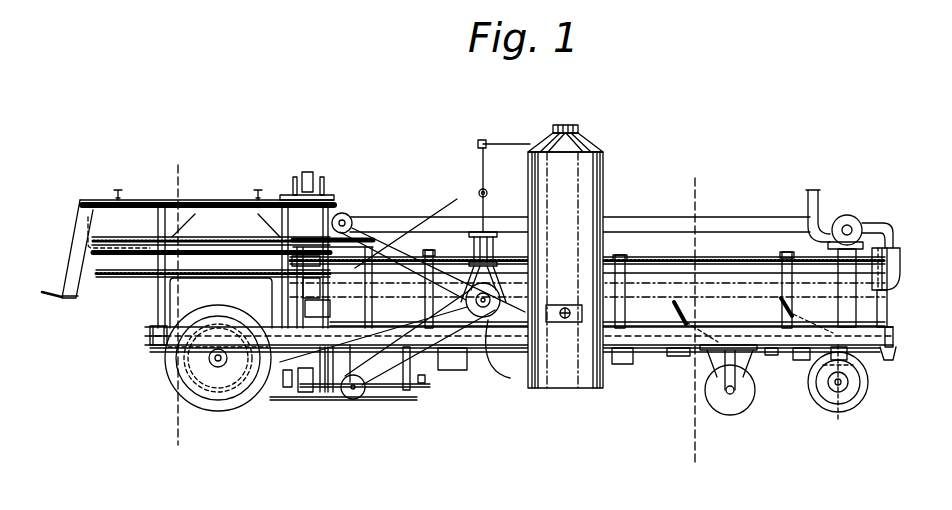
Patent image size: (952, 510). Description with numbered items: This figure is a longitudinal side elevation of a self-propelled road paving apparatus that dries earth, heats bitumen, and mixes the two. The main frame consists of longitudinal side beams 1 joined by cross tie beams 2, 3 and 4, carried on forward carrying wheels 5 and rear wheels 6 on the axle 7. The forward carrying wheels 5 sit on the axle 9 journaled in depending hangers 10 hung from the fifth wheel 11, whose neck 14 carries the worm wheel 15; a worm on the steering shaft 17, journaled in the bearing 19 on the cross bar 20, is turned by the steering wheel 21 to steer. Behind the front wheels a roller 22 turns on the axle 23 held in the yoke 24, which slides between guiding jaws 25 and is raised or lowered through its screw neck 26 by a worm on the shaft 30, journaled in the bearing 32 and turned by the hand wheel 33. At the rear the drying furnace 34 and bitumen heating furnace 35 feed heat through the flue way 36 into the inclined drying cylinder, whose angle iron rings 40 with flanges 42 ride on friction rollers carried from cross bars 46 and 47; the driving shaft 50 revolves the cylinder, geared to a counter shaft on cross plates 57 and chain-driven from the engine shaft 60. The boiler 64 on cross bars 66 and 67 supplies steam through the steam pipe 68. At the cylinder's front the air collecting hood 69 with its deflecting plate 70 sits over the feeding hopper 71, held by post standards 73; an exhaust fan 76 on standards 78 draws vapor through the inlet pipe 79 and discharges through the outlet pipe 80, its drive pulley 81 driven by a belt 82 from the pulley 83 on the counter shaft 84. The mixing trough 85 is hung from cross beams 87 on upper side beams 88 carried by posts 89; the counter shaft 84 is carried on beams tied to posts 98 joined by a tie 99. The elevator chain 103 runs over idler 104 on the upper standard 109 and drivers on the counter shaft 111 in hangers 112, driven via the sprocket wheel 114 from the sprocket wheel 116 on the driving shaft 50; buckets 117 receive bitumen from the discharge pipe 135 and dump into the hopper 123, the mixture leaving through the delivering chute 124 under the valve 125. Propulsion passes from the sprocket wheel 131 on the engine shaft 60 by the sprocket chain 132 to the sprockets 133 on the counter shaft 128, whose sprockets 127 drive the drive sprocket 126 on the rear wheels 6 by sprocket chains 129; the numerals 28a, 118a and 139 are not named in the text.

The side beams 1 is at (150, 337).
The cross tie beam 2 is at (894, 340).
The cross tie beam 3 is at (779, 374).
The cross tie beam 4 is at (176, 308).
The forward carrying wheels 5 is at (692, 317).
The rear wheels 6 is at (218, 375).
The axle 7 is at (828, 390).
The axle 9 is at (839, 385).
The depending hangers 10 is at (556, 318).
The fifth wheel 11 is at (152, 347).
The neck 14 is at (884, 354).
The worm wheel 15 is at (886, 339).
The steering shaft 17 is at (822, 301).
The bearing 19 is at (795, 301).
The cross bar 20 is at (767, 389).
The steering wheel 21 is at (796, 311).
The roller 22 is at (706, 388).
The axle 23 is at (679, 419).
The yoke 24 is at (745, 388).
The guiding jaws 25 is at (712, 378).
The screw neck 26 is at (670, 366).
The bracket pin 28a is at (674, 378).
The shaft 30 is at (717, 300).
The bearing 32 is at (684, 304).
The hand wheel 33 is at (693, 312).
The drying furnace 34 is at (165, 272).
The bitumen heating furnace 35 is at (172, 319).
The flue way 36 is at (331, 315).
The angle iron rings 40 is at (607, 281).
The flanges 42 is at (434, 252).
The cross bar 46 is at (626, 366).
The cross bar 47 is at (433, 367).
The driving shaft 50 is at (622, 364).
The cross plates 57 is at (587, 305).
The engine shaft 60 is at (501, 300).
The boiler 64 is at (580, 189).
The cross bar 66 is at (593, 406).
The cross bar 67 is at (549, 359).
The steam pipe 68 is at (487, 140).
The air collecting hood 69 is at (893, 250).
The deflecting plate 70 is at (896, 284).
The feeding hopper 71 is at (892, 297).
The post standards 73 is at (890, 317).
The exhaust fan 76 is at (858, 220).
The standards 78 is at (847, 288).
The inlet pipe 79 is at (893, 225).
The outlet pipe 80 is at (807, 192).
The drive pulley 81 is at (847, 225).
The belt 82 is at (650, 218).
The pulley 83 is at (352, 218).
The counter shaft 84 is at (355, 226).
The mixing trough 85 is at (205, 268).
The cross beams 87 is at (121, 192).
The side beams 88 is at (200, 199).
The posts 89 is at (290, 259).
The posts 98 is at (366, 304).
The tie 99 is at (348, 214).
The elevator chain 103 is at (306, 260).
The sprocket wheel idler 104 is at (300, 180).
The upper standard 109 is at (327, 186).
The counter shaft 111 is at (430, 370).
The hangers 112 is at (287, 392).
The sprocket wheel 114 is at (420, 390).
The sprocket wheel 116 is at (365, 372).
The buckets 117 is at (313, 180).
The bearing 118a is at (355, 403).
The hopper 123 is at (292, 188).
The delivering chute 124 is at (66, 256).
The valve 125 is at (39, 304).
The drive sprocket 126 is at (212, 398).
The sprockets 127 is at (356, 388).
The counter shaft 128 is at (358, 393).
The sprocket chains 129 is at (240, 405).
The sprocket wheel 131 is at (508, 351).
The sprocket chain 132 is at (378, 386).
The sprockets 133 is at (418, 304).
The discharge pipe 135 is at (330, 342).
The axle 139 is at (350, 357).